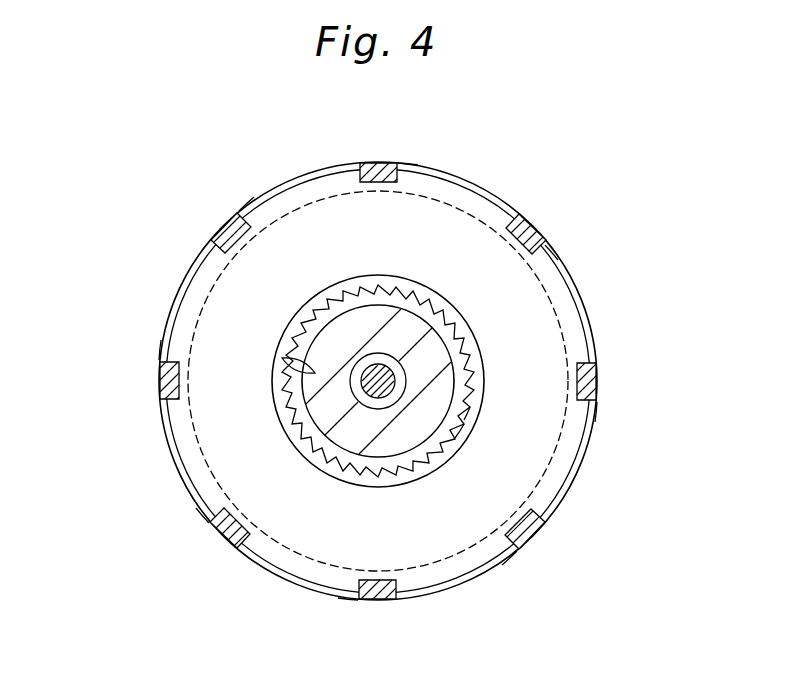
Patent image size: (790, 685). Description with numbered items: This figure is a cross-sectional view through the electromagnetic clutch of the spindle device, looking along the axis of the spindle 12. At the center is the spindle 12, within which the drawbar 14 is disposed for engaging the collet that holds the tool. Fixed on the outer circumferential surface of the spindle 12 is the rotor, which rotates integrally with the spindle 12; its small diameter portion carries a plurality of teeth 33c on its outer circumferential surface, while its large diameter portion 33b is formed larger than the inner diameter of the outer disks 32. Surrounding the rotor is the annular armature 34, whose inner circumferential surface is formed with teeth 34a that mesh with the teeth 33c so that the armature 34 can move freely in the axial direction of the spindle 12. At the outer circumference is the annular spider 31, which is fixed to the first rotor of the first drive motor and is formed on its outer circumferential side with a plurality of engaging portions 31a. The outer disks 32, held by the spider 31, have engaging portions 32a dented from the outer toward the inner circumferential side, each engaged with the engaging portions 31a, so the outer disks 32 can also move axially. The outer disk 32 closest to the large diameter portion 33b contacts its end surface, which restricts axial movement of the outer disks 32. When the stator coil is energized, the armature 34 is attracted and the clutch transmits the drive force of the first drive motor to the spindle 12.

The spindle 12 is at (440, 350).
The drawbar 14 is at (395, 378).
The spider 31 is at (190, 265).
The engaging portions 31a is at (382, 163).
The outer disks 32 is at (213, 433).
The engaging portions 32a is at (227, 232).
The large diameter portion 33b is at (474, 407).
The teeth 33c is at (476, 441).
The armature 34 is at (287, 343).
The teeth 34a is at (282, 358).